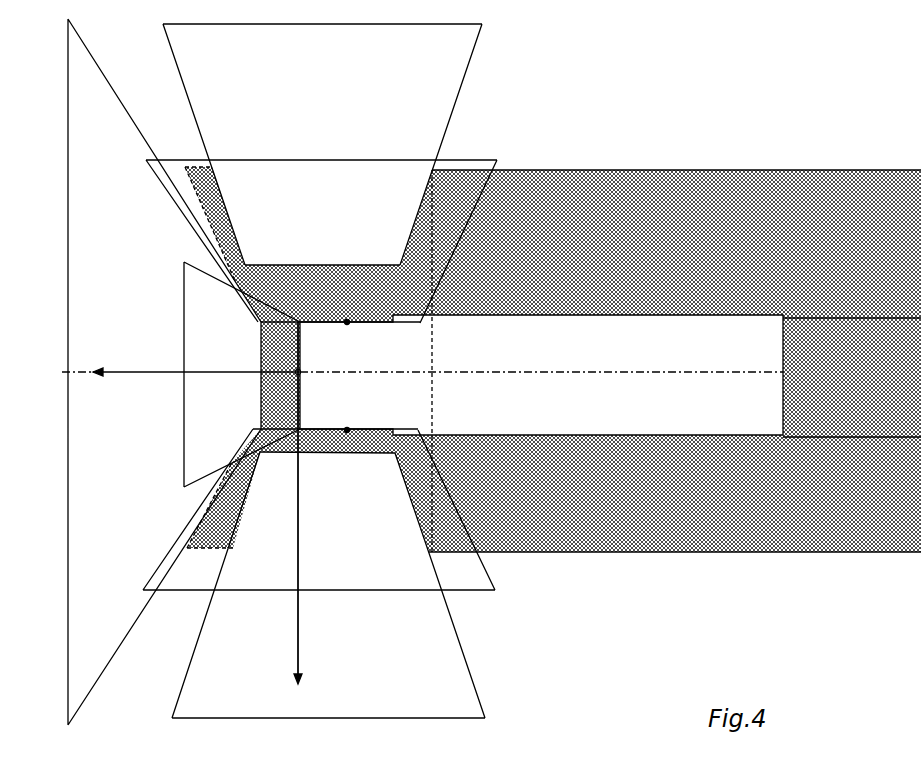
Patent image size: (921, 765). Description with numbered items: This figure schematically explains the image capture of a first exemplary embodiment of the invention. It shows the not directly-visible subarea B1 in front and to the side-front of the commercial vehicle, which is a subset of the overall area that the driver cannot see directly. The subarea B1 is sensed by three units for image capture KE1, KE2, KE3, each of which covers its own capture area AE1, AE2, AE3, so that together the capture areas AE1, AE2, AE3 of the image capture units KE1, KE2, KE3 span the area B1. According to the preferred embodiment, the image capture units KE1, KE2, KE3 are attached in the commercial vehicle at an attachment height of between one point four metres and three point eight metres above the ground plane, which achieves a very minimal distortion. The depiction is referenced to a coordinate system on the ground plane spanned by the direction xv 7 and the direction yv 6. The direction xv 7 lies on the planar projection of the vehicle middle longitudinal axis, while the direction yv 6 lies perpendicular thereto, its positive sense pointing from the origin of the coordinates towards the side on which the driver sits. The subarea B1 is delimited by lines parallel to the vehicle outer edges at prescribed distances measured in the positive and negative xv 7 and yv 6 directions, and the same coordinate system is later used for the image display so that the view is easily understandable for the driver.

The subarea front and side front B1 is at (553, 359).
The xv-direction 7 is at (152, 370).
The capture area of first image capture unit AE1 is at (475, 160).
The capture area of second image capture unit AE2 is at (480, 592).
The capture area of third image capture unit AE3 is at (182, 466).
The image capture unit KE1 is at (340, 336).
The image capture unit KE2 is at (335, 418).
The image capture unit KE3 is at (281, 375).
The xv-direction xv is at (422, 381).
The yv-direction yv is at (311, 502).
The yv-direction 6 is at (302, 615).